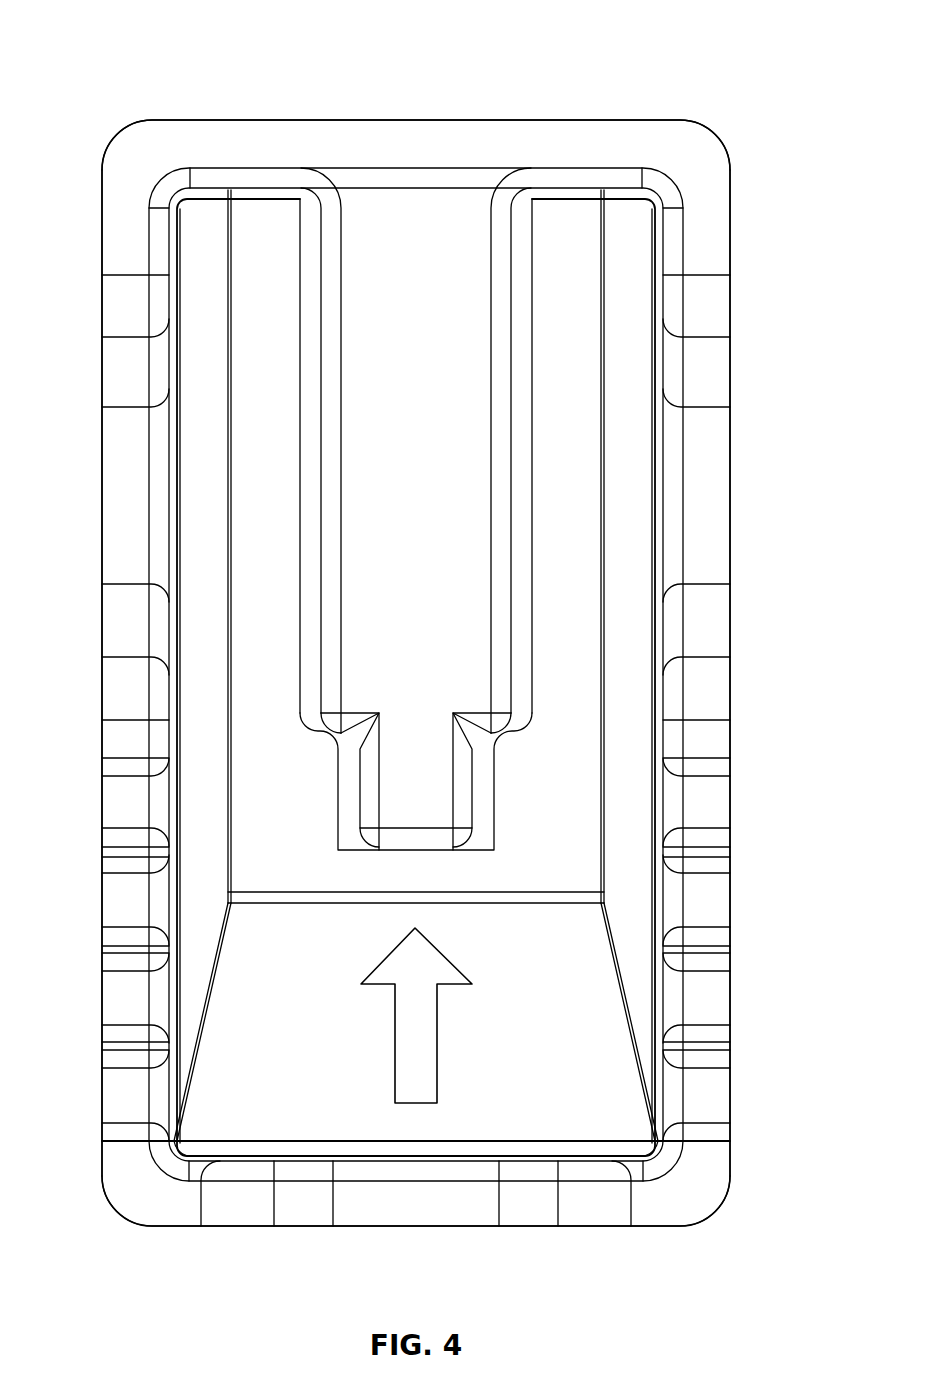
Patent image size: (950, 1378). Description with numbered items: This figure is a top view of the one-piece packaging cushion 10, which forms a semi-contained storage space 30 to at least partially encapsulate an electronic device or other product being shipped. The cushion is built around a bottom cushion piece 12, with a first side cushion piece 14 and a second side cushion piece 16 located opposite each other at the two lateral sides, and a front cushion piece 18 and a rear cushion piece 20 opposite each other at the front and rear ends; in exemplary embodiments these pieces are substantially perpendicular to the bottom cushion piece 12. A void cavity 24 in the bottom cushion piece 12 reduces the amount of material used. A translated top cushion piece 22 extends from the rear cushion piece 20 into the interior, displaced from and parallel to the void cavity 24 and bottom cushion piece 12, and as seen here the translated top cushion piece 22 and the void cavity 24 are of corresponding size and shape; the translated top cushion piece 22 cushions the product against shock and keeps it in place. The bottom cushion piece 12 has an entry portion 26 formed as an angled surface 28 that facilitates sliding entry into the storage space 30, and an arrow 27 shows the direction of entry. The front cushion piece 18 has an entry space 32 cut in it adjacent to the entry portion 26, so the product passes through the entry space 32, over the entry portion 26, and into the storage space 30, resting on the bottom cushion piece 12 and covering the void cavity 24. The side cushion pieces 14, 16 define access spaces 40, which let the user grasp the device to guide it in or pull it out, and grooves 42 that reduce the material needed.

The packaging cushion 10 is at (181, 36).
The bottom cushion piece 12 is at (577, 706).
The first side cushion piece 14 is at (102, 612).
The second side cushion piece 16 is at (730, 735).
The front cushion piece 18 is at (634, 1228).
The rear cushion piece 20 is at (626, 121).
The translated top cushion piece 22 is at (502, 222).
The void cavity 24 is at (517, 598).
The entry portion 26 is at (499, 1110).
The arrow 27 is at (408, 1038).
The angled surface 28 is at (606, 934).
The storage space 30 is at (329, 768).
The entry space 32 is at (398, 1215).
The access space 40 is at (113, 465).
The grooves 42 is at (112, 815).